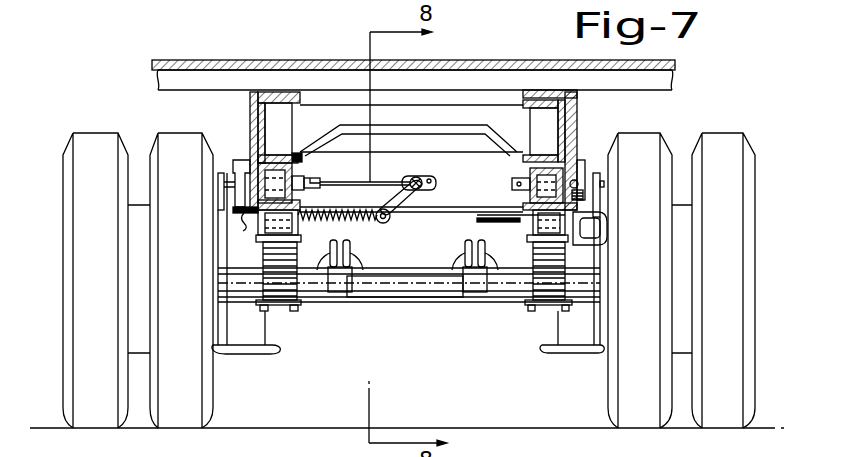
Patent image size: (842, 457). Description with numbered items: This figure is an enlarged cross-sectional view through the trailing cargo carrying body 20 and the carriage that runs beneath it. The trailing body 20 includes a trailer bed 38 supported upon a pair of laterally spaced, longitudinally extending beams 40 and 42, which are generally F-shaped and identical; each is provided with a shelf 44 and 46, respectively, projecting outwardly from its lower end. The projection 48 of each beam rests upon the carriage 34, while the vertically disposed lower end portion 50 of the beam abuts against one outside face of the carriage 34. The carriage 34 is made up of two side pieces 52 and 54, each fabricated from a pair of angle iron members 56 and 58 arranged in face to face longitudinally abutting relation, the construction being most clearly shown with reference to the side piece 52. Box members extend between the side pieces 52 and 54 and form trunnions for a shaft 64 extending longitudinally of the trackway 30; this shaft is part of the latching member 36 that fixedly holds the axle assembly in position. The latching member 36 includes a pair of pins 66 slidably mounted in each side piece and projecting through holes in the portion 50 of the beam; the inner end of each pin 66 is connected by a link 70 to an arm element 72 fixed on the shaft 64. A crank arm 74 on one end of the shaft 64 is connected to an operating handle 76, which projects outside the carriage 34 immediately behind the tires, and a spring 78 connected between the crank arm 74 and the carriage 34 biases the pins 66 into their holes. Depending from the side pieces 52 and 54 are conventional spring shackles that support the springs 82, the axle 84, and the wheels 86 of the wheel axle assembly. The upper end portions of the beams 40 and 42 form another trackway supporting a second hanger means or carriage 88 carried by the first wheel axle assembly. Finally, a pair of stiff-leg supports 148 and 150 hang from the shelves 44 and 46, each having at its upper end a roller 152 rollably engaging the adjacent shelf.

The trailing cargo carrying body 20 is at (682, 63).
The trailer bed 38 is at (178, 60).
The trackway 30 is at (587, 141).
The beam 40 is at (244, 108).
The beam 42 is at (583, 120).
The projection 48 is at (282, 153).
The angle iron member 58 is at (298, 153).
The side piece 52 is at (303, 172).
The side piece 54 is at (520, 197).
The second hanger means or carriage 88 is at (530, 108).
The latching member 36 is at (489, 179).
The carriage 34 is at (525, 212).
The link 70 is at (362, 187).
The shaft 64 is at (428, 176).
The arm element 72 is at (423, 193).
The crank arm 74 is at (390, 222).
The spring 78 is at (350, 221).
The lower end portion 50 is at (246, 163).
The pin 66 is at (233, 182).
The shelf 44 is at (244, 230).
The angle iron member 56 is at (296, 235).
The support 148 is at (248, 337).
The support 150 is at (573, 332).
The roller 152 is at (585, 170).
The shelf 46 is at (583, 204).
The operating handle 76 is at (606, 230).
The axle 84 is at (421, 290).
The spring 82 is at (519, 300).
The wheels 86 is at (730, 308).